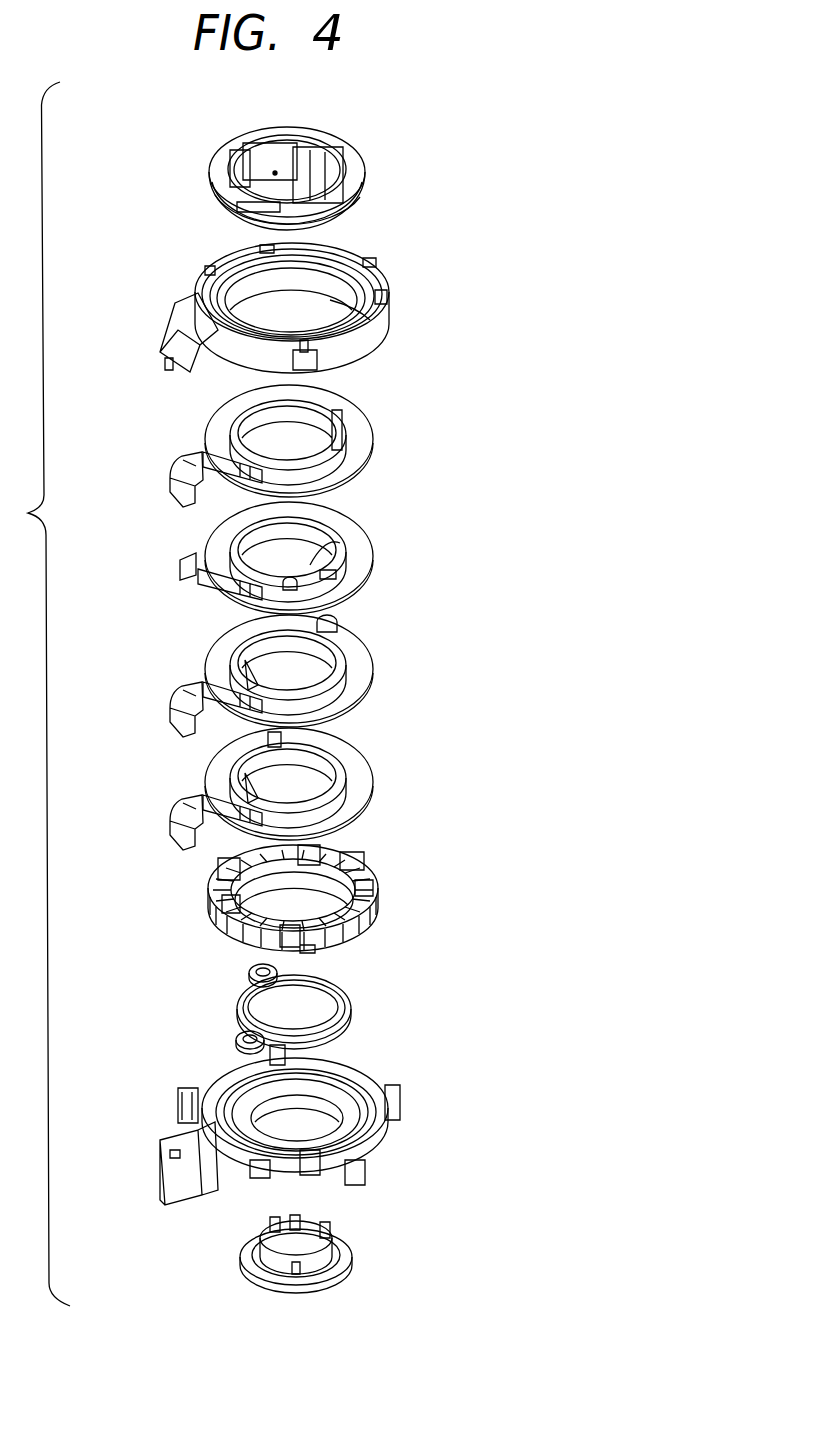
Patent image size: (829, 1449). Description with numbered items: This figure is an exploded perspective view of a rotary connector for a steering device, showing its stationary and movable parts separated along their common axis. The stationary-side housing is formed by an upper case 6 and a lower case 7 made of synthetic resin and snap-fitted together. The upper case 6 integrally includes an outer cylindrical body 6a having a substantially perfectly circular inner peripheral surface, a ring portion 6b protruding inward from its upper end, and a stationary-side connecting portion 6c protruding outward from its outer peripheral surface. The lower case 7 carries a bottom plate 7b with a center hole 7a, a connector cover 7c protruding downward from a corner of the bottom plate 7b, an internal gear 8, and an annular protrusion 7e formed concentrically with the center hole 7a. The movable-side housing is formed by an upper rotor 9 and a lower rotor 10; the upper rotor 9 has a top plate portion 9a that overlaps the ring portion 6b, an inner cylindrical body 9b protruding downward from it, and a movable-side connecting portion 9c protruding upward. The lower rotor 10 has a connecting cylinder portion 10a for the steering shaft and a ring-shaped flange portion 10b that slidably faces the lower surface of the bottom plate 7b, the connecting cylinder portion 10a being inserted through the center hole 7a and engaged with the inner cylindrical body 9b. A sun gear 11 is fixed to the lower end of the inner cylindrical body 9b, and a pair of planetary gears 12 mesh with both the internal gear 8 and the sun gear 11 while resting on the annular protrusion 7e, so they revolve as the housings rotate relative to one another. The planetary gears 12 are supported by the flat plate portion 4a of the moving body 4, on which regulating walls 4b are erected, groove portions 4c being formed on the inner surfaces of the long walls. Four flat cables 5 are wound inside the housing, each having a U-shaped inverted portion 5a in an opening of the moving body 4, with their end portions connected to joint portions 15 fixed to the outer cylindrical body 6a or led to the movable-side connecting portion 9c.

The moving body 4 is at (292, 904).
The flat plate portion 4a is at (305, 948).
The regulating walls 4b is at (218, 880).
The groove portions 4c is at (218, 918).
The flat cables 5 is at (374, 438).
The inverted portion 5a is at (248, 478).
The upper case 6 is at (282, 304).
The outer cylindrical body 6a is at (375, 330).
The ring portion 6b is at (265, 260).
The stationary-side connecting portion 6c is at (173, 315).
The lower case 7 is at (282, 1122).
The center hole 7a is at (318, 1128).
The bottom plate 7b is at (360, 1114).
The connector cover 7c is at (170, 1181).
The annular protrusion 7e is at (172, 1113).
The internal gear 8 is at (345, 1087).
The upper rotor 9 is at (291, 154).
The top plate portion 9a is at (232, 144).
The inner cylindrical body 9b is at (323, 220).
The movable-side connecting portion 9c is at (345, 174).
The lower rotor 10 is at (291, 1254).
The connecting cylinder portion 10a is at (330, 1277).
The flange portion 10b is at (245, 1258).
The sun gear 11 is at (352, 1012).
The planetary gears 12 is at (250, 971).
The joint portions 15 is at (172, 476).